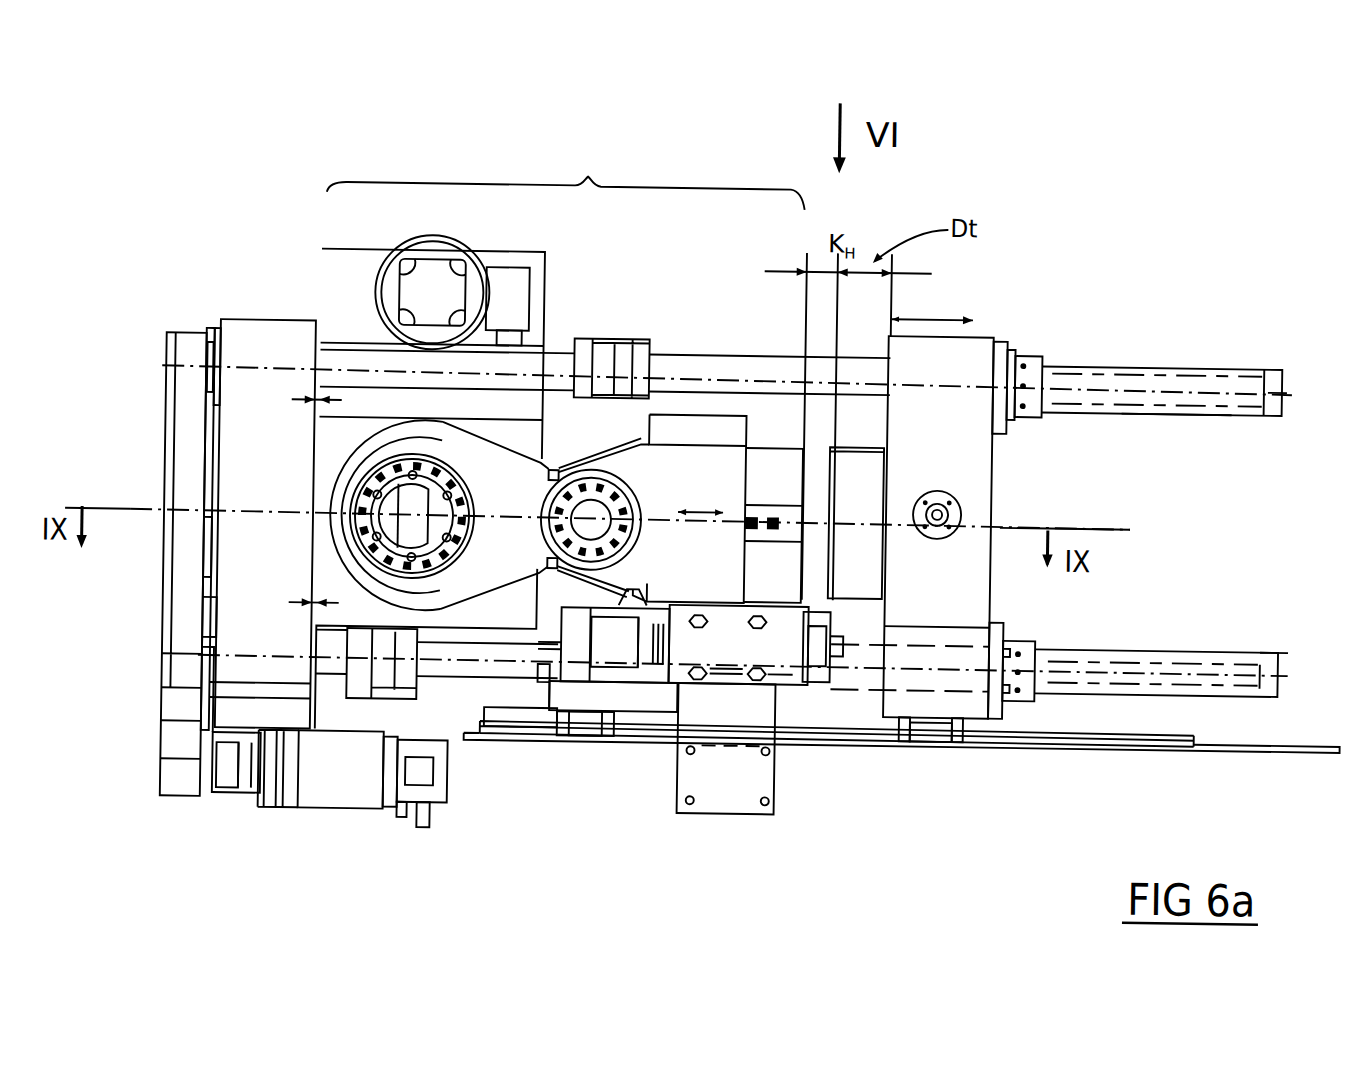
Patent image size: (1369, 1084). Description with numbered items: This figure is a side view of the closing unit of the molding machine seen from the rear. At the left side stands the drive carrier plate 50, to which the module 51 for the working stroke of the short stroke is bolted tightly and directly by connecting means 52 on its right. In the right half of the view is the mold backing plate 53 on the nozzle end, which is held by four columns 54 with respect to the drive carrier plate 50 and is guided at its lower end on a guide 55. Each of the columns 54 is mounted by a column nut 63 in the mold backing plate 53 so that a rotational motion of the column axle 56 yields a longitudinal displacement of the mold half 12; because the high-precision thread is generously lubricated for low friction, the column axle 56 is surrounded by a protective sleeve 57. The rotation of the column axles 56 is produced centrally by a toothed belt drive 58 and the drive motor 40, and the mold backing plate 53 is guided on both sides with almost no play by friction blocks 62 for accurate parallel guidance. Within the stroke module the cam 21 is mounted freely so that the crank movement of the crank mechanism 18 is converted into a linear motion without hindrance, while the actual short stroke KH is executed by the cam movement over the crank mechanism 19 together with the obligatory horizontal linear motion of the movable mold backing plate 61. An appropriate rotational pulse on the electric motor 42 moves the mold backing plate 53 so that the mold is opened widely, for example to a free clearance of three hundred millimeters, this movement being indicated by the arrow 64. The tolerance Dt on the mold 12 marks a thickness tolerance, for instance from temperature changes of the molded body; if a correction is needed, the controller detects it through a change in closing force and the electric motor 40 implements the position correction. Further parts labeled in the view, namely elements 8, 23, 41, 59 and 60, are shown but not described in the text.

The machine bed 8 is at (1328, 734).
The mold half 12 is at (876, 501).
The crank mechanism 18 is at (524, 560).
The crank mechanism 19 is at (584, 506).
The cam 21 is at (429, 537).
The coupling block 23 is at (784, 485).
The drive motor 40 is at (346, 805).
The motor flange 41 is at (229, 812).
The electric motor 42 is at (418, 263).
The drive carrier plate 50 is at (260, 340).
The module for the working stroke 51 is at (560, 431).
The connecting means 52 is at (307, 596).
The mold backing plate on the nozzle end 53 is at (986, 336).
The columns 54 is at (1226, 366).
The guide 55 is at (1121, 737).
The column axle 56 is at (1140, 367).
The protective sleeve 57 is at (1192, 397).
The toothed belt drive 58 is at (141, 362).
The support 59 is at (938, 736).
The drive shaft 60 is at (690, 368).
The movable mold backing plate 61 is at (708, 578).
The friction blocks 62 is at (600, 732).
The column nut 63 is at (1053, 345).
The arrow 64 is at (942, 312).